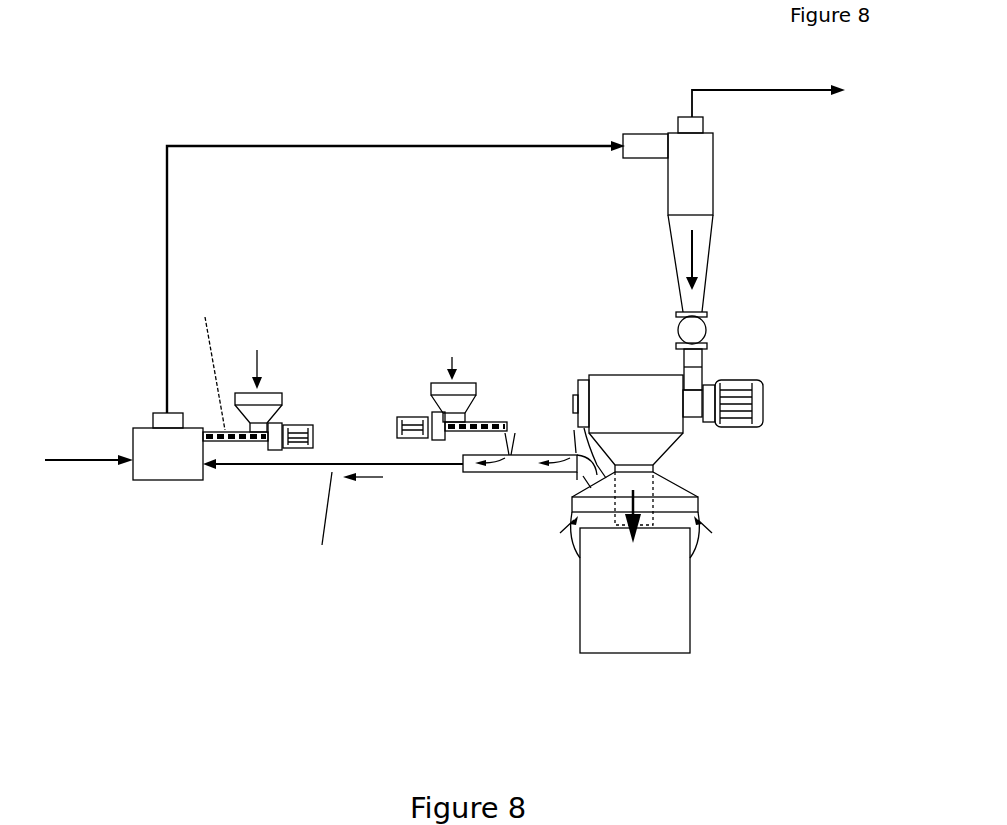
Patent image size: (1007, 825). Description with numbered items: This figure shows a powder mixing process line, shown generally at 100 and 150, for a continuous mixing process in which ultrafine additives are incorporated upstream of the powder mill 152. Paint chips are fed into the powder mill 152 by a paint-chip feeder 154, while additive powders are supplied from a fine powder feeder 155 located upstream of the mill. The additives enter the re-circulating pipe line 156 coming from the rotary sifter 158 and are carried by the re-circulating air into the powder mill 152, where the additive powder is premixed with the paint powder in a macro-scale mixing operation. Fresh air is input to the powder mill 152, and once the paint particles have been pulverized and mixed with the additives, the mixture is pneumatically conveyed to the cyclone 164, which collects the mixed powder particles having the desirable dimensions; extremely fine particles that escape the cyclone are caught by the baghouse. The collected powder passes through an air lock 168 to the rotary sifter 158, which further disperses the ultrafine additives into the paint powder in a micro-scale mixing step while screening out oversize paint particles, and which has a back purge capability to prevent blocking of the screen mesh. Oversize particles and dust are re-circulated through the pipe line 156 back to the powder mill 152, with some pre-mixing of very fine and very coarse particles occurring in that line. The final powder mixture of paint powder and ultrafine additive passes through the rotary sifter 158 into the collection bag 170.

The paint recycling system 100 is at (440, 344).
The apparatus 150 is at (396, 252).
The powder mill 152 is at (157, 457).
The paint-chip feeder 154 is at (287, 397).
The fine powder feeder 155 is at (478, 385).
The re-circulating pipe line 156 is at (470, 477).
The rotary sifter 158 is at (638, 392).
The cyclone 164 is at (703, 193).
The air lock 168 is at (699, 330).
The collection bag 170 is at (673, 602).